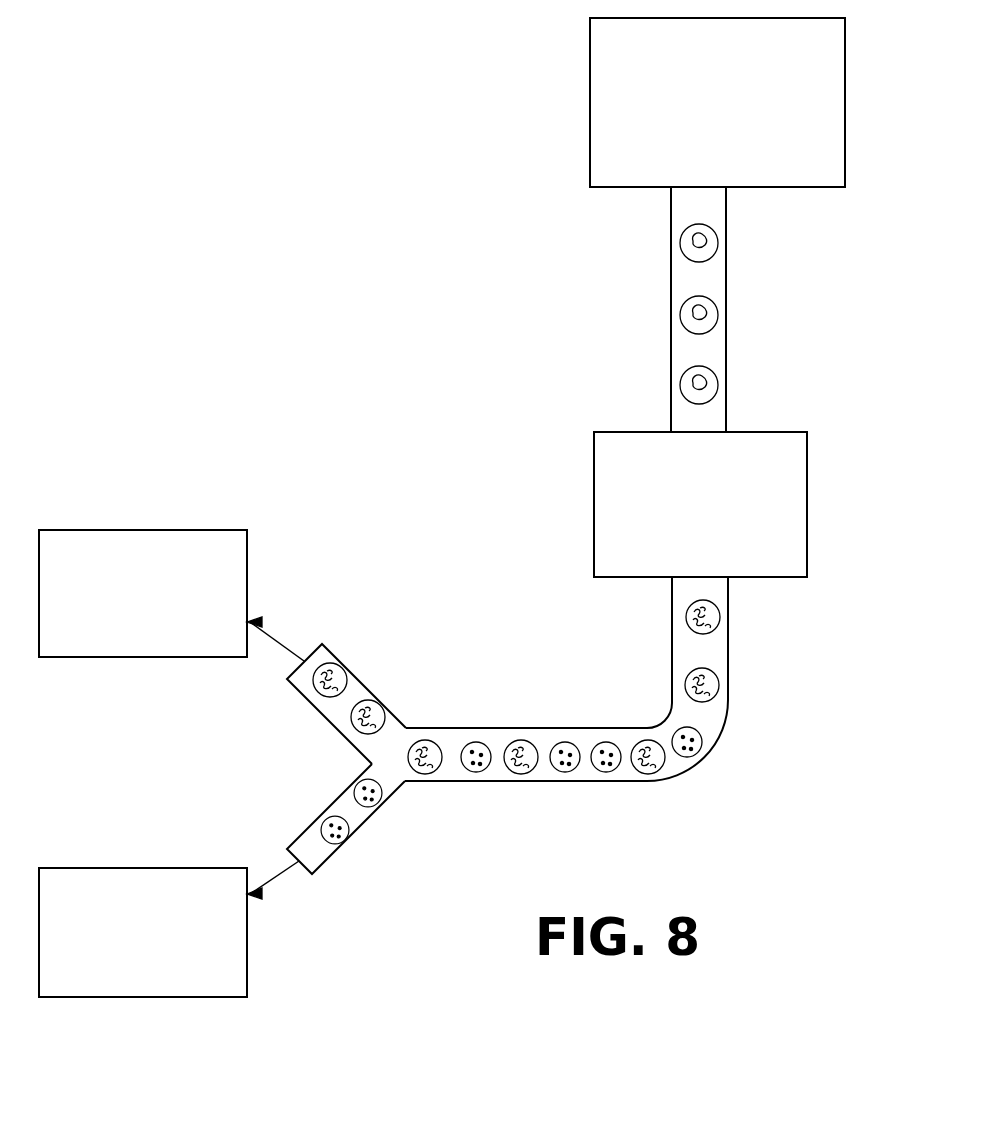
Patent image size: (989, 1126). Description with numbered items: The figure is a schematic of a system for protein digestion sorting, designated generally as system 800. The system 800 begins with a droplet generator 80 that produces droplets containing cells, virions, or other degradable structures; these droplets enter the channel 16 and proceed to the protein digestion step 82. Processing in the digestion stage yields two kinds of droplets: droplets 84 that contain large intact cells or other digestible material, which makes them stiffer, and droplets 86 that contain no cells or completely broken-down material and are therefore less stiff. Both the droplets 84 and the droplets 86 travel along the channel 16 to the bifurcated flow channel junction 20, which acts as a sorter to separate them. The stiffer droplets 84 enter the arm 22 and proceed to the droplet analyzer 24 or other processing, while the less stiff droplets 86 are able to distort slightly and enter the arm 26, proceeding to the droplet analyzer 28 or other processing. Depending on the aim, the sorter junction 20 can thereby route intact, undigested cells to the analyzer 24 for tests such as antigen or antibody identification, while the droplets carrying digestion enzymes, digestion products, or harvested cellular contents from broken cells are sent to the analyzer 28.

The system for protein digestion sorting 800 is at (443, 312).
The droplet generator 80 is at (593, 182).
The protein digestion step 82 is at (598, 521).
The channel 16 is at (618, 783).
The bifurcated flow channel junction 20 is at (408, 727).
The arm 22 is at (343, 665).
The droplet analyzer 24 is at (163, 530).
The arm 26 is at (354, 838).
The droplet analyzer 28 is at (165, 868).
The droplets 84 is at (720, 682).
The droplets 86 is at (607, 742).